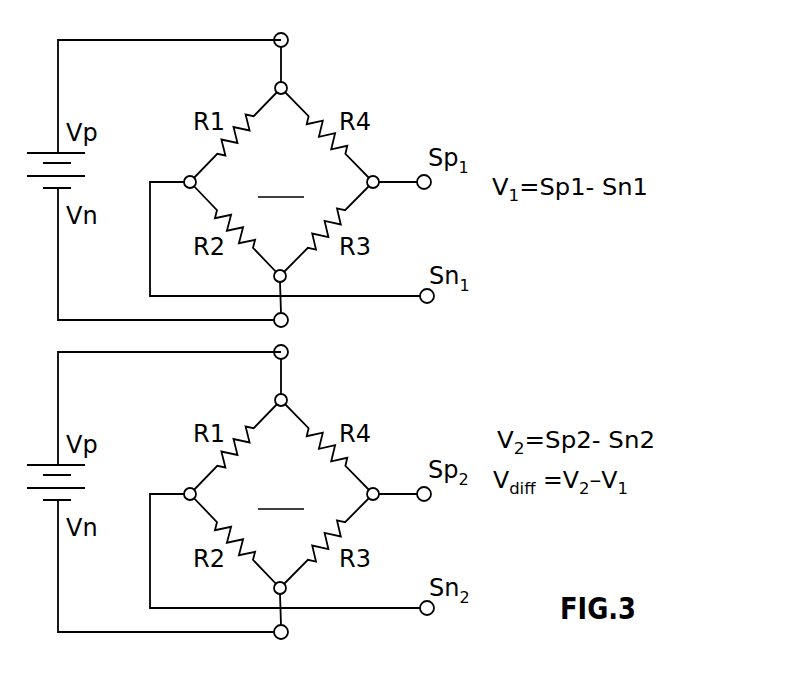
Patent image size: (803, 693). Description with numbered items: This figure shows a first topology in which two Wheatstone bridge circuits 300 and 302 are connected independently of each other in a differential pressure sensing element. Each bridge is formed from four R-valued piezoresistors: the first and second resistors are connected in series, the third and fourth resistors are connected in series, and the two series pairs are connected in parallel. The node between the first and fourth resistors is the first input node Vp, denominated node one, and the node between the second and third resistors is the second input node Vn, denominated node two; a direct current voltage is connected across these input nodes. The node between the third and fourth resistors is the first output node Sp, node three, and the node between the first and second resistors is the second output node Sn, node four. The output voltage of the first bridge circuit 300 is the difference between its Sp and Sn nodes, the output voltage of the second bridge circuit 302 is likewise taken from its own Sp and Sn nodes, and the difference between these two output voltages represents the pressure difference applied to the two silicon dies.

The first Wheatstone bridge circuit 300 is at (281, 185).
The second Wheatstone bridge circuit 302 is at (281, 497).